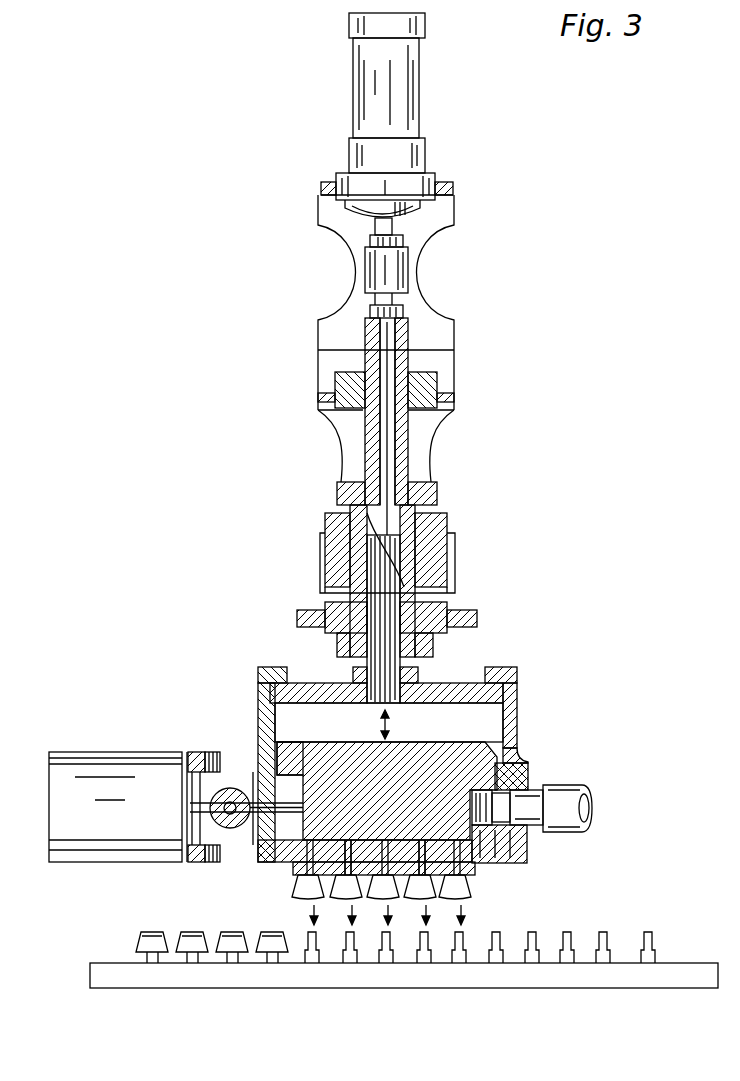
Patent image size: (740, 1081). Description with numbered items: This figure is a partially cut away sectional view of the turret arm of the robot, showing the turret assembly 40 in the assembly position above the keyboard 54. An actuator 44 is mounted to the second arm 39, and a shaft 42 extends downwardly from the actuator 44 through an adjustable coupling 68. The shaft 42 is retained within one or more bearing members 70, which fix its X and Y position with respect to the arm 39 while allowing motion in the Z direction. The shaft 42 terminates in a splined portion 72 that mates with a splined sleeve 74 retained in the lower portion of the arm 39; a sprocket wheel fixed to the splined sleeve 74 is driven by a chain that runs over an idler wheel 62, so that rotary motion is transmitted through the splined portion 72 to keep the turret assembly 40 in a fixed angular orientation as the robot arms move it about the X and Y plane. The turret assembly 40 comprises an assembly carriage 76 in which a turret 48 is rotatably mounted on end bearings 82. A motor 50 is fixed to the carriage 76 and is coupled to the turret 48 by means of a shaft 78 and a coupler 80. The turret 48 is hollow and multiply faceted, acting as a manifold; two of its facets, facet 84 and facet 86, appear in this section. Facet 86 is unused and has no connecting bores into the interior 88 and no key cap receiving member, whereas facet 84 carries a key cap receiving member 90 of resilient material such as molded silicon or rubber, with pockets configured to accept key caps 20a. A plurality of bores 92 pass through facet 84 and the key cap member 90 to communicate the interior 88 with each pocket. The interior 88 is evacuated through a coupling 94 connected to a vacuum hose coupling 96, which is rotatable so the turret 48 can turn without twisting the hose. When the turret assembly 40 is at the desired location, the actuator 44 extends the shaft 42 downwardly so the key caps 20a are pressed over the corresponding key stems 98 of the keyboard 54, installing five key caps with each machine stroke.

The actuator 44 is at (411, 104).
The second arm 39 is at (447, 188).
The adjustable coupling 68 is at (363, 262).
The shaft 42 is at (430, 328).
The bearing members 70 is at (433, 388).
The splined portion 72 is at (388, 600).
The splined sleeve 74 is at (330, 615).
The idler wheel 62 is at (457, 618).
The turret assembly 40 is at (429, 768).
The assembly carriage 76 is at (260, 672).
The turret 48 is at (490, 748).
The facet 86 is at (446, 739).
The end bearings 82 is at (292, 752).
The key cap receiving member 90 is at (480, 873).
The facet 84 is at (528, 846).
The coupling 94 is at (546, 805).
The vacuum hose coupling 96 is at (580, 786).
The motor 50 is at (94, 752).
The coupler 80 is at (232, 830).
The shaft 78 is at (232, 788).
The interior 88 is at (392, 826).
The bores 92 is at (347, 840).
The key caps 20a is at (270, 932).
The key stems 98 is at (385, 937).
The keyboard 54 is at (406, 978).